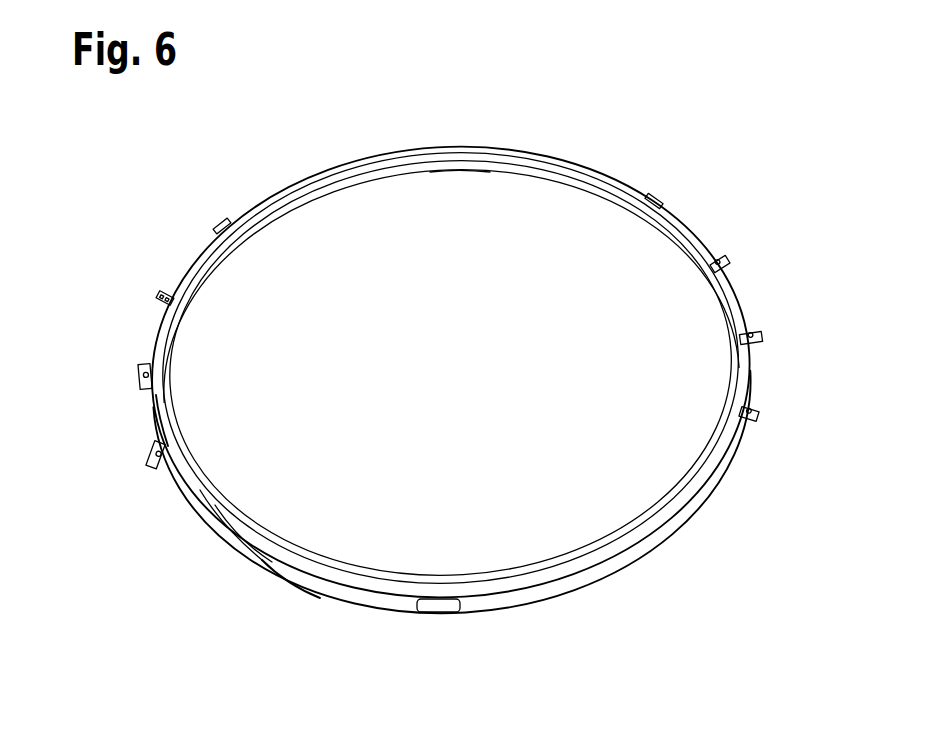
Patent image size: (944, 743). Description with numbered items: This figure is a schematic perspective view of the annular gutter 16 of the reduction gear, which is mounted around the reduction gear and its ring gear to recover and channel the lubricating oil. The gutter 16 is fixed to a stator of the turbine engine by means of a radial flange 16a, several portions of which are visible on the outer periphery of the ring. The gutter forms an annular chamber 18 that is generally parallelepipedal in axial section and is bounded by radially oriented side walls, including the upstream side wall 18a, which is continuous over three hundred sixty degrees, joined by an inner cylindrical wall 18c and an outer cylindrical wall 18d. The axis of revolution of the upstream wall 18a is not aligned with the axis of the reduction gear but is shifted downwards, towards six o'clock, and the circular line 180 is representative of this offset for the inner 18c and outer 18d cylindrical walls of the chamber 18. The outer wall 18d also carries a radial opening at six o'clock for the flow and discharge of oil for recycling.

The annular gutter 16 is at (706, 166).
The radial flange 16a is at (753, 412).
The circular line 180 is at (163, 427).
The inner cylindrical wall 18c is at (487, 178).
The chamber 18 is at (255, 484).
The upstream side wall 18a is at (250, 543).
The outer cylindrical wall 18d is at (285, 567).